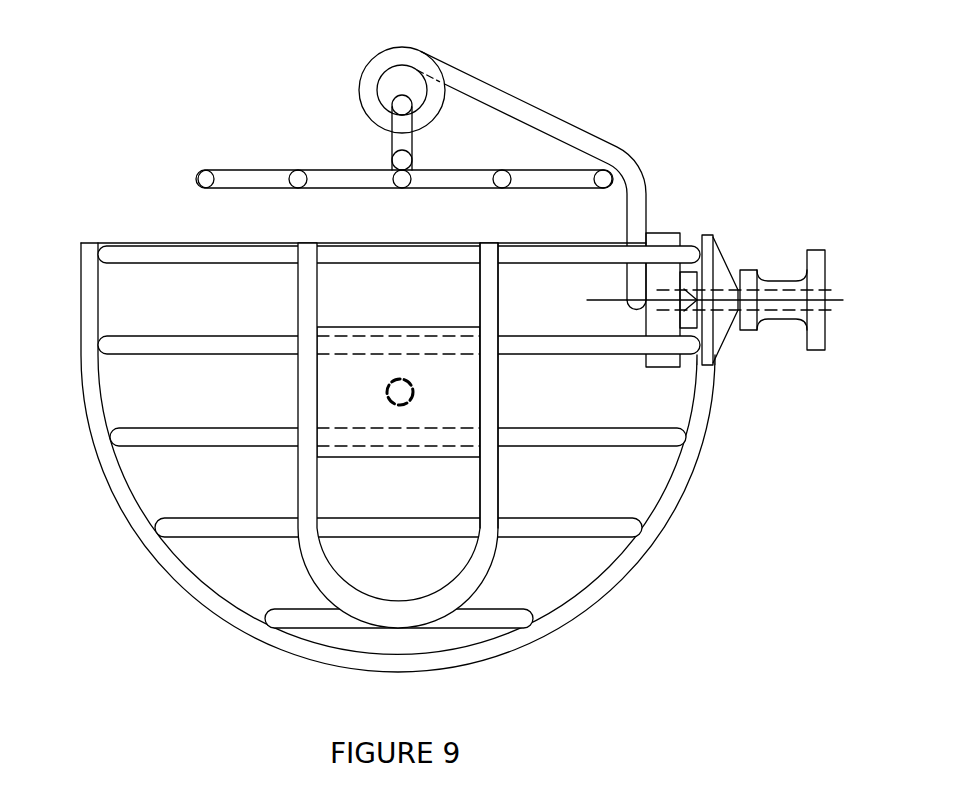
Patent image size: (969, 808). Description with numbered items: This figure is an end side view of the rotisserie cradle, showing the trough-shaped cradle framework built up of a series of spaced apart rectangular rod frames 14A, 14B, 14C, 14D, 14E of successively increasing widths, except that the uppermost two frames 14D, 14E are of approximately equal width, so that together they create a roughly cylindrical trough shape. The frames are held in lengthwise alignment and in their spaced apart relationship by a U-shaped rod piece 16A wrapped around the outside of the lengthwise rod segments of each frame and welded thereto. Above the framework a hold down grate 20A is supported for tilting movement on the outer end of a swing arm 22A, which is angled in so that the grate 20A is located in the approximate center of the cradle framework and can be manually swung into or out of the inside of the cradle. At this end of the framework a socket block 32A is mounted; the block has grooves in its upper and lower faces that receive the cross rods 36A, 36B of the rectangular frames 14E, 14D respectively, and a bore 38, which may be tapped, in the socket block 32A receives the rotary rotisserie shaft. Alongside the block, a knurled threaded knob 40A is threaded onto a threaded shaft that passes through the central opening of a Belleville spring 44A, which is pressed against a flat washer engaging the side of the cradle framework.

The rectangular rod frame 14A is at (303, 637).
The rectangular rod frame 14B is at (162, 547).
The rectangular rod frame 14C is at (103, 445).
The rectangular rod frame 14D is at (106, 332).
The rectangular rod frame 14E is at (120, 233).
The U-shaped rod piece 16A is at (188, 612).
The hold down grate 20A is at (263, 161).
The swing arm 22A is at (508, 78).
The socket block 32A is at (476, 395).
The cross rod 36A is at (215, 331).
The cross rod 36B is at (268, 485).
The bore 38 is at (394, 366).
The knurled threaded knob 40A is at (807, 208).
The Belleville spring 44A is at (729, 241).